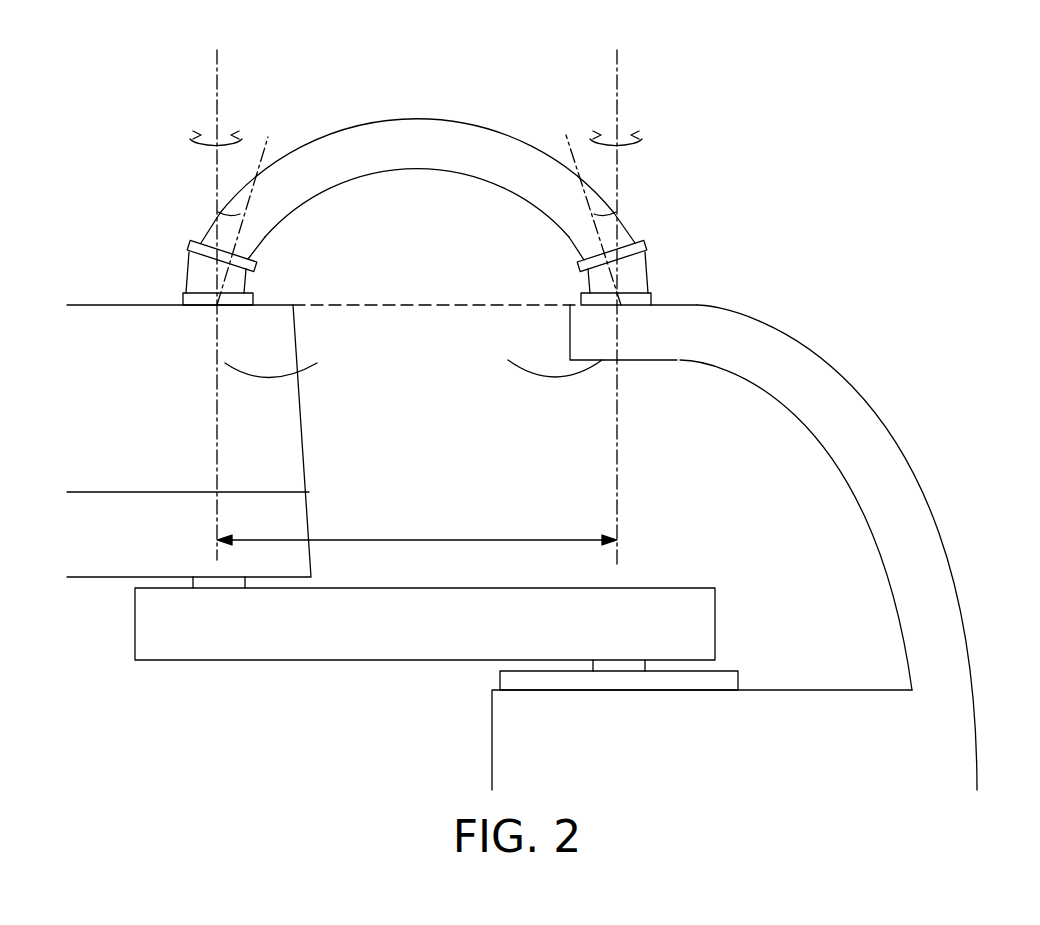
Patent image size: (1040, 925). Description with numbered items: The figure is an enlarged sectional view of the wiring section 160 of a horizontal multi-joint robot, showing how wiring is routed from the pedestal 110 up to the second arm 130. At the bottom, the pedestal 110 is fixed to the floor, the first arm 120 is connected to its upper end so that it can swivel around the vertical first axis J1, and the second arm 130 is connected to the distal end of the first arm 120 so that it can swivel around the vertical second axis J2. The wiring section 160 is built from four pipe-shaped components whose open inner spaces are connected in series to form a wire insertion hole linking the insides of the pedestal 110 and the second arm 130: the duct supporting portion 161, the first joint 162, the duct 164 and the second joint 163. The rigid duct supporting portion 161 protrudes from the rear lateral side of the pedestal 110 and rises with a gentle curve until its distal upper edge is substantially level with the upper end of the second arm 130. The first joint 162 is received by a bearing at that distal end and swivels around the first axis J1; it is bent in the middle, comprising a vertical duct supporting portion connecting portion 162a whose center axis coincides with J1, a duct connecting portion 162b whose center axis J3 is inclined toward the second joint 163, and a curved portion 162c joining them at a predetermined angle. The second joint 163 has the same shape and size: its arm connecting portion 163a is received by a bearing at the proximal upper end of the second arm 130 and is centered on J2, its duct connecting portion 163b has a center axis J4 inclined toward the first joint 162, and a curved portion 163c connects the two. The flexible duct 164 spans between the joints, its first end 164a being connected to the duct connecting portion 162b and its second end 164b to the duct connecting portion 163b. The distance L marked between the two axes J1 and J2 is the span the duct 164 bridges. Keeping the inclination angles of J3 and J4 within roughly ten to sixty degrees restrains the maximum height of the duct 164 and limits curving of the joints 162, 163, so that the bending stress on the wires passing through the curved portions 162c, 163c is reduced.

The pedestal 110 is at (506, 752).
The first arm 120 is at (337, 640).
The second arm 130 is at (288, 430).
The wiring section 160 is at (840, 246).
The duct supporting portion 161 is at (890, 497).
The first joint 162 is at (664, 295).
The duct supporting portion connecting portion 162a is at (649, 307).
The duct connecting portion 162b is at (638, 243).
The curved portion 162c is at (632, 273).
The second joint 163 is at (150, 262).
The arm connecting portion 163a is at (198, 304).
The duct connecting portion 163b is at (188, 250).
The curved portion 163c is at (200, 280).
The duct 164 is at (418, 172).
The first end 164a is at (587, 243).
The second end 164b is at (250, 242).
The first axis J1 is at (616, 295).
The second axis J2 is at (216, 293).
The third axis J3 is at (578, 196).
The fourth axis J4 is at (253, 193).
The distance between axes L is at (417, 527).